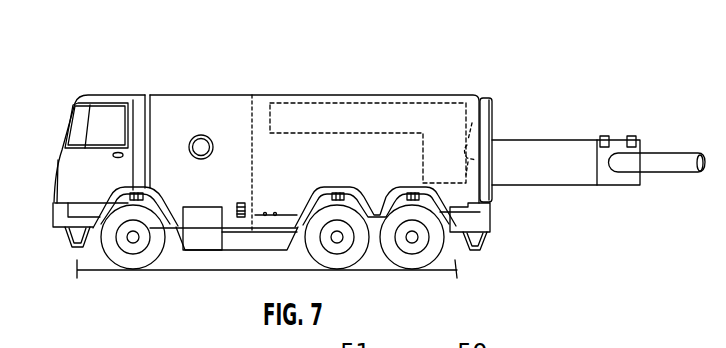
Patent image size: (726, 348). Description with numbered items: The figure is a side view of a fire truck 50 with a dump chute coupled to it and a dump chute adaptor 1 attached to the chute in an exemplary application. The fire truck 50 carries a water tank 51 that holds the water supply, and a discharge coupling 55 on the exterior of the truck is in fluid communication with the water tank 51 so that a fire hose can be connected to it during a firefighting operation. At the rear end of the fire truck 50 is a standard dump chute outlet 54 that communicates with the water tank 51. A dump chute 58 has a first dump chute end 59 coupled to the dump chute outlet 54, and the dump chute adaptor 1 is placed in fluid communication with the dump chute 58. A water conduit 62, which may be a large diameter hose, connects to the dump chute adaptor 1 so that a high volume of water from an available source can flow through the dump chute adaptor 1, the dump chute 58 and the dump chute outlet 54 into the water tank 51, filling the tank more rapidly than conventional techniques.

The dump chute adaptor 1 is at (628, 190).
The fire truck 50 is at (388, 97).
The water tank 51 is at (345, 112).
The dump chute outlet 54 is at (493, 113).
The discharge coupling 55 is at (201, 140).
The dump chute 58 is at (568, 188).
The first dump chute end 59 is at (492, 153).
The water conduit 62 is at (667, 170).